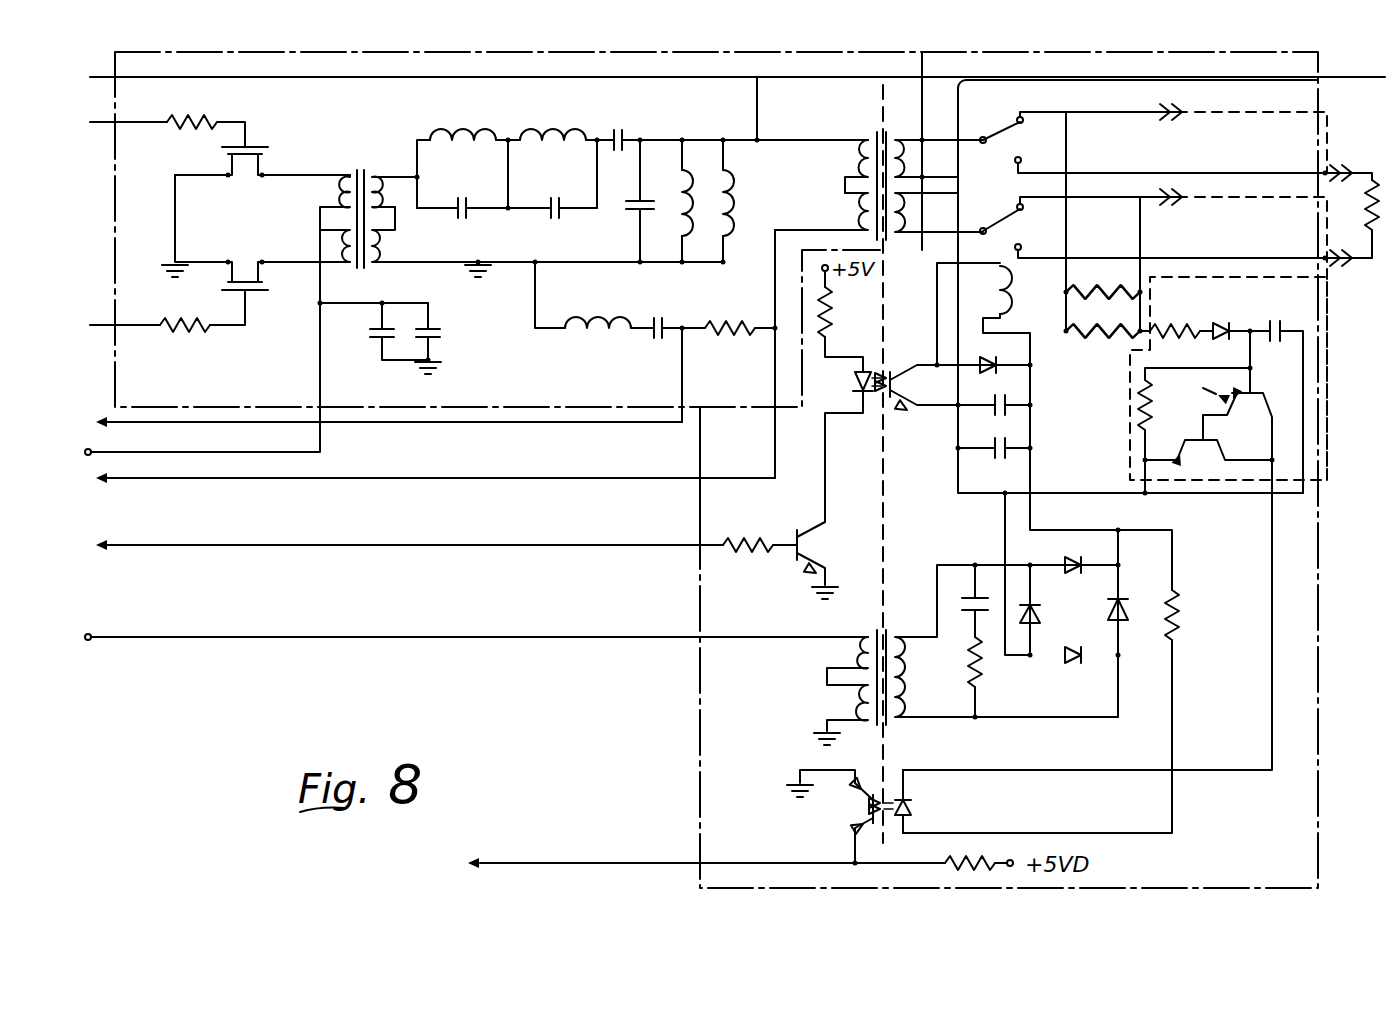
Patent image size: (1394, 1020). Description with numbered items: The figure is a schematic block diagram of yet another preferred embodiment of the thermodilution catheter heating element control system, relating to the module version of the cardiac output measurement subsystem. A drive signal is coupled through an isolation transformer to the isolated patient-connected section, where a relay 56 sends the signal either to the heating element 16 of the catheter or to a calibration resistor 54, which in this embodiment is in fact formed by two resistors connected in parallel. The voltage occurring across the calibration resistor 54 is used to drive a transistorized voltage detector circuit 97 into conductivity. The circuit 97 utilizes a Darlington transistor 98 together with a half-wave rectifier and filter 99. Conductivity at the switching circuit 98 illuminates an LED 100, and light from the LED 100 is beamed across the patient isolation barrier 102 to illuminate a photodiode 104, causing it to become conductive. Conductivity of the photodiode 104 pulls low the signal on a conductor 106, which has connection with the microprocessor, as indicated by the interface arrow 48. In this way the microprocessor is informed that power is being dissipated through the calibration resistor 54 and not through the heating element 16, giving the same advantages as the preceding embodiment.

The heating element 16 is at (1377, 164).
The interface arrow 48 is at (420, 645).
The calibration resistor 54 is at (1103, 179).
The relay 56 is at (1004, 122).
The transistorized voltage detector circuit 97 is at (1327, 318).
The Darlington transistor 98 is at (1280, 401).
The half-wave rectifier and filter 99 is at (1236, 316).
The LED 100 is at (918, 805).
The patient isolation barrier 102 is at (883, 545).
The photodiode 104 is at (821, 822).
The conductor 106 is at (700, 808).